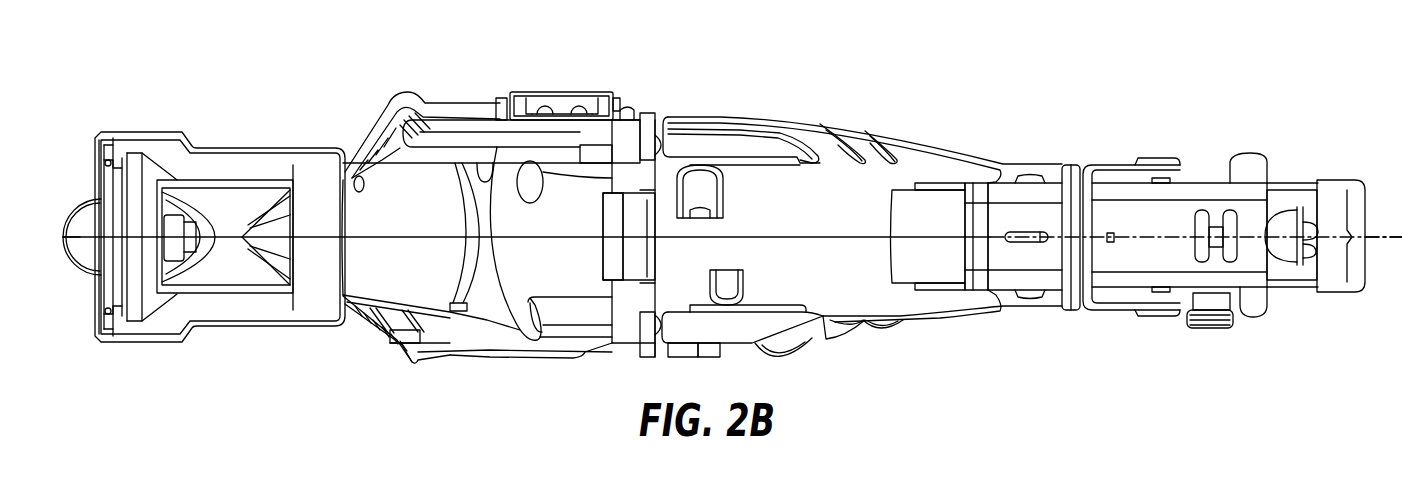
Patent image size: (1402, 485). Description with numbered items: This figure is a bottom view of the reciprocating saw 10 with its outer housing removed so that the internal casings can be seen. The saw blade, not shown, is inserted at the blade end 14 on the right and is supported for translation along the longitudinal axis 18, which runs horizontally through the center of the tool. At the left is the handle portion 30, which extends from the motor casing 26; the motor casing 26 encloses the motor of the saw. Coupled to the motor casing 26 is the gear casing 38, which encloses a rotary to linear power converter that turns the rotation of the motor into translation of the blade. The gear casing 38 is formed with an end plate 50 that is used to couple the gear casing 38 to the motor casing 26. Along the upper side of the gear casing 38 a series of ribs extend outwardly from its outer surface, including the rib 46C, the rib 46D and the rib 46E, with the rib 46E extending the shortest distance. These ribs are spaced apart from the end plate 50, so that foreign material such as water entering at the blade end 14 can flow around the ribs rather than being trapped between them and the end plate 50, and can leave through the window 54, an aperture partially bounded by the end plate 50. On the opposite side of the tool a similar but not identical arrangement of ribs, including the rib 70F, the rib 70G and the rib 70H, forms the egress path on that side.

The reciprocating saw 10 is at (171, 87).
The handle portion 30 is at (79, 206).
The motor casing 26 is at (542, 255).
The end plate 50 is at (645, 135).
The window 54 is at (602, 262).
The rib 46E is at (747, 145).
The rib 46D is at (823, 145).
The rib 46C is at (871, 145).
The gear casing 38 is at (927, 168).
The blade end 14 is at (1312, 164).
The longitudinal axis 18 is at (1377, 241).
The rib 70H is at (783, 323).
The rib 70G is at (840, 328).
The rib 70F is at (882, 333).